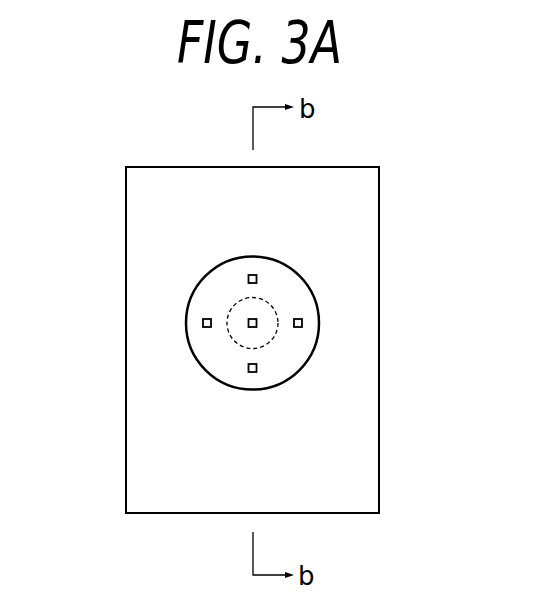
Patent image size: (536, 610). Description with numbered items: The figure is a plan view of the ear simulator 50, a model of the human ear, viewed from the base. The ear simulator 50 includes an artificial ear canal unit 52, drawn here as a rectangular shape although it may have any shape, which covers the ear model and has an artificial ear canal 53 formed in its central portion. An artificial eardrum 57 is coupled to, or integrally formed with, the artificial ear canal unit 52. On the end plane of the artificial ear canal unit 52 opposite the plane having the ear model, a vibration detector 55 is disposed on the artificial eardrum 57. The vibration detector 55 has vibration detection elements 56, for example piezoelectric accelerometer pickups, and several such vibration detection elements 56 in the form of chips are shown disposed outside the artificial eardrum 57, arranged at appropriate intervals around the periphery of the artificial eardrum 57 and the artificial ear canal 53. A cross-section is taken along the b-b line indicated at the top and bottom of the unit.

The ear simulator 50 is at (107, 237).
The artificial ear canal unit 52 is at (215, 166).
The artificial ear canal 53 is at (231, 308).
The vibration detector 55 is at (198, 337).
The vibration detection element 56 is at (257, 327).
The artificial eardrum 57 is at (296, 270).